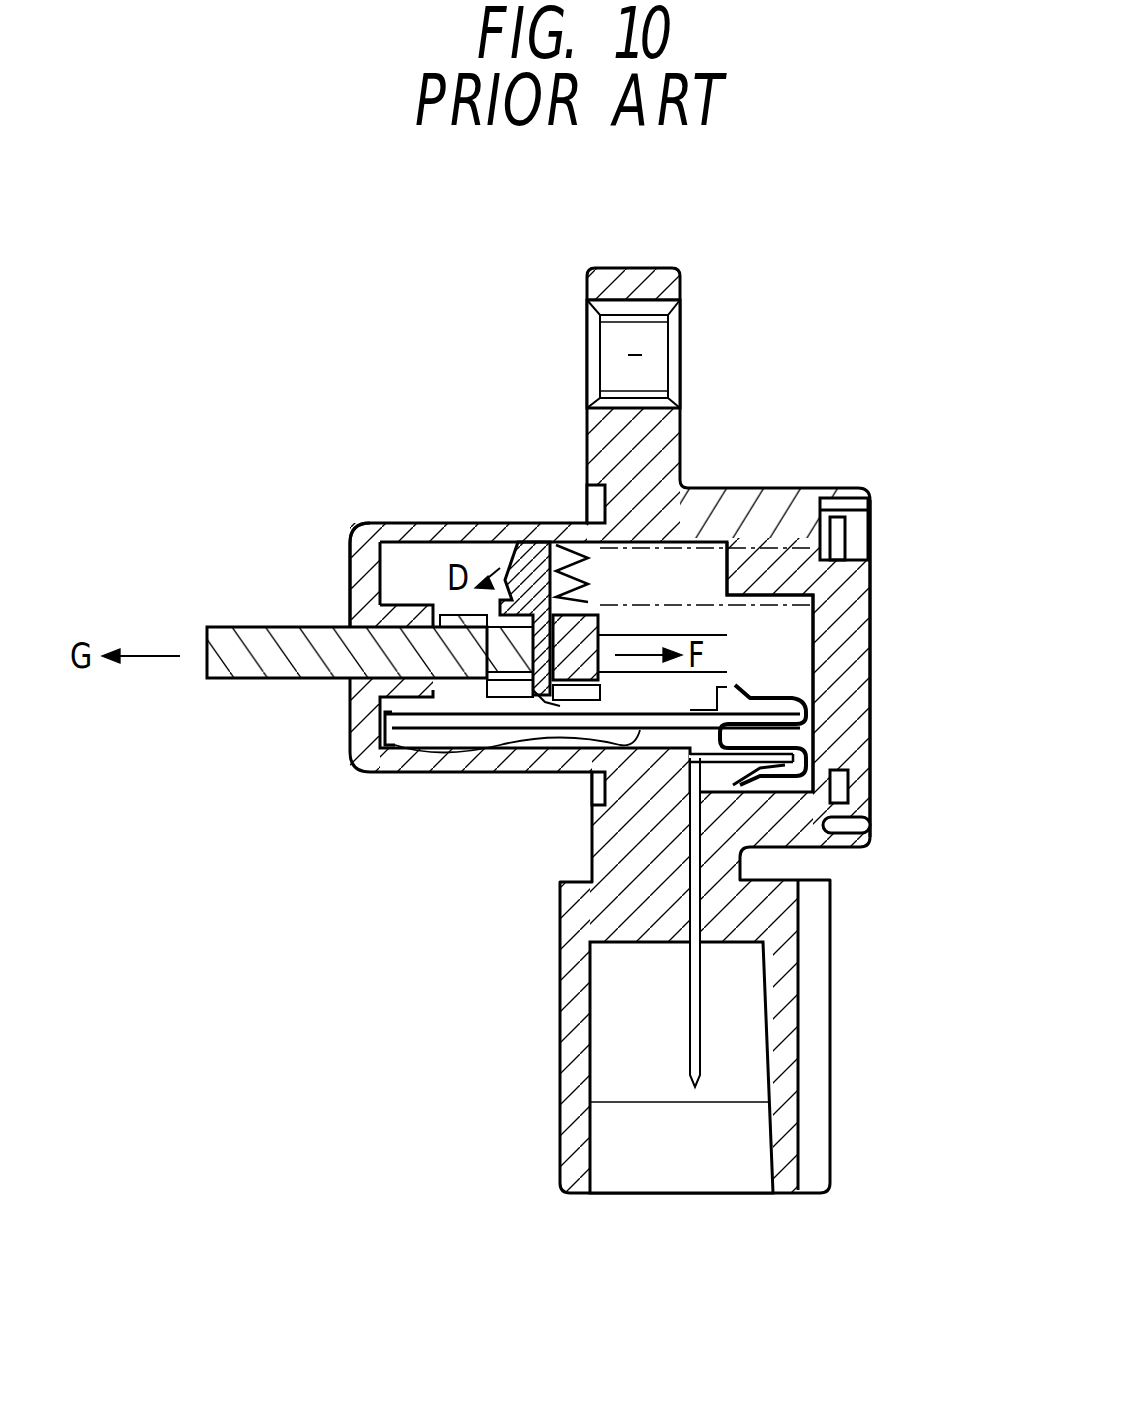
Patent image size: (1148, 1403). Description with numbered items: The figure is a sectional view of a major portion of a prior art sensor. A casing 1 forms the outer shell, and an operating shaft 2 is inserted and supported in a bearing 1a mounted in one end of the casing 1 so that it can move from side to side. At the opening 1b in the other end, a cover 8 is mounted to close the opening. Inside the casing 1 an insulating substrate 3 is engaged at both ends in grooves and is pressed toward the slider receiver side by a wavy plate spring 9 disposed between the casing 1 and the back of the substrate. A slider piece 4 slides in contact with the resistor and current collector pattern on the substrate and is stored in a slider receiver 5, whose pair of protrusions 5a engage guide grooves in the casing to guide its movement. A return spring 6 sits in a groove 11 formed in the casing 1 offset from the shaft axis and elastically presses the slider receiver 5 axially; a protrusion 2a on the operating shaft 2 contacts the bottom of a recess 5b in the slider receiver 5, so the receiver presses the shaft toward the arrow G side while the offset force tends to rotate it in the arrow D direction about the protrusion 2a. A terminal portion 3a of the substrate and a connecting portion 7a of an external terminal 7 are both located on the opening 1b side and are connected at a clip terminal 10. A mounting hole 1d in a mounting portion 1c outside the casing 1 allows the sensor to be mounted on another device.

The casing 1 is at (403, 505).
The bearing 1a is at (352, 600).
The opening 1b is at (868, 515).
The mounting portion 1c is at (648, 282).
The mounting hole 1d is at (685, 350).
The operating shaft 2 is at (245, 605).
The protrusion 2a is at (560, 645).
The insulating substrate 3 is at (395, 718).
The terminal portion 3a is at (855, 714).
The slider piece 4 is at (548, 700).
The slider receiver 5 is at (518, 575).
The protrusions 5a is at (575, 705).
The recess 5b is at (520, 700).
The return spring 6 is at (570, 562).
The external terminal 7 is at (720, 918).
The connecting portion 7a is at (810, 778).
The cover 8 is at (855, 672).
The wavy plate spring 9 is at (400, 748).
The clip terminal 10 is at (790, 780).
The groove 11 is at (690, 552).